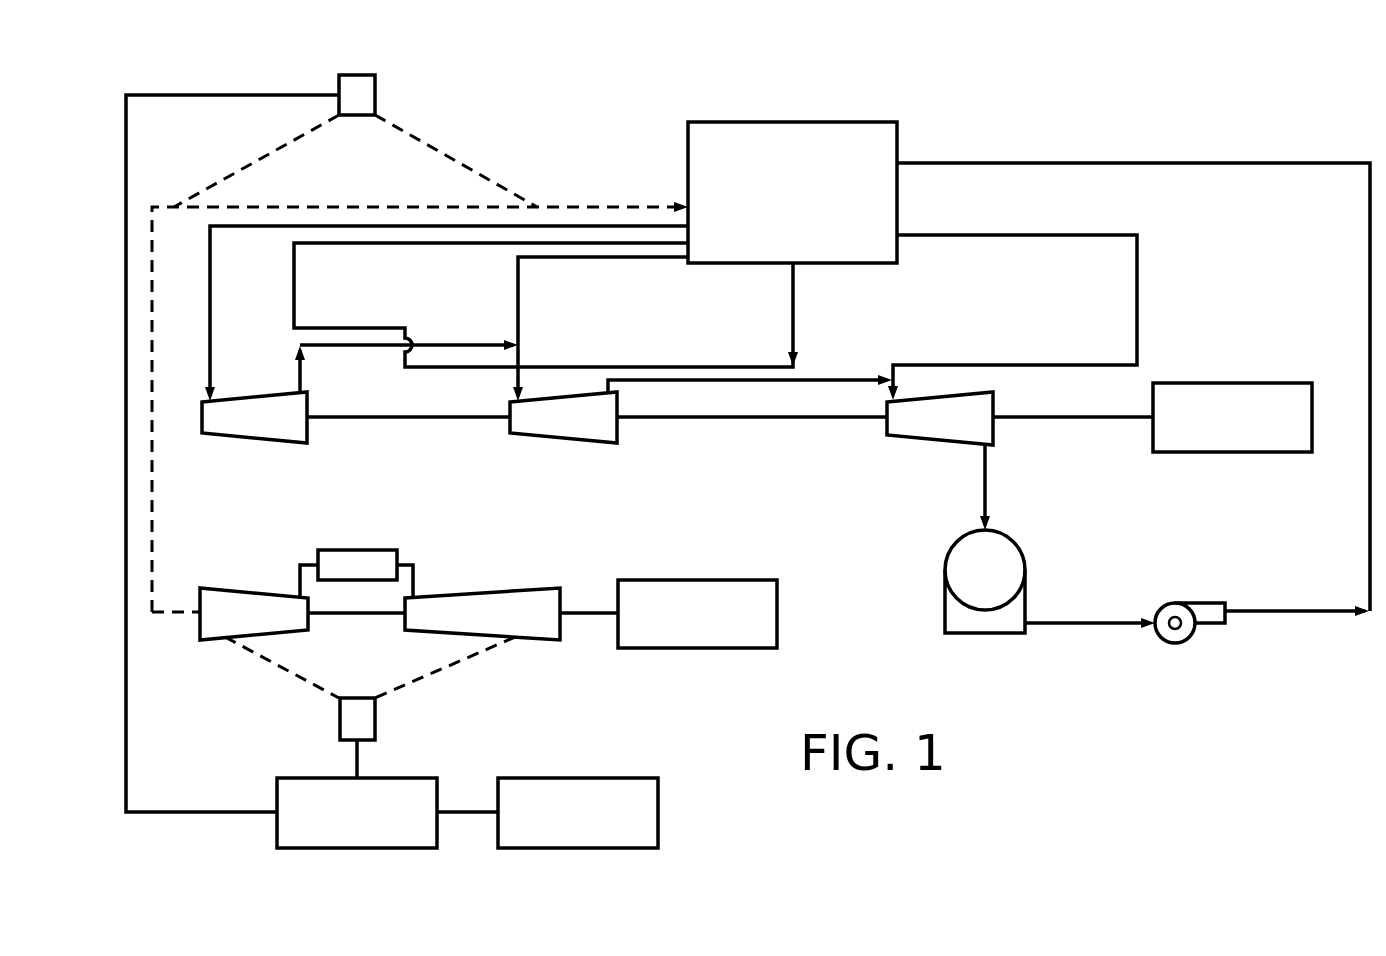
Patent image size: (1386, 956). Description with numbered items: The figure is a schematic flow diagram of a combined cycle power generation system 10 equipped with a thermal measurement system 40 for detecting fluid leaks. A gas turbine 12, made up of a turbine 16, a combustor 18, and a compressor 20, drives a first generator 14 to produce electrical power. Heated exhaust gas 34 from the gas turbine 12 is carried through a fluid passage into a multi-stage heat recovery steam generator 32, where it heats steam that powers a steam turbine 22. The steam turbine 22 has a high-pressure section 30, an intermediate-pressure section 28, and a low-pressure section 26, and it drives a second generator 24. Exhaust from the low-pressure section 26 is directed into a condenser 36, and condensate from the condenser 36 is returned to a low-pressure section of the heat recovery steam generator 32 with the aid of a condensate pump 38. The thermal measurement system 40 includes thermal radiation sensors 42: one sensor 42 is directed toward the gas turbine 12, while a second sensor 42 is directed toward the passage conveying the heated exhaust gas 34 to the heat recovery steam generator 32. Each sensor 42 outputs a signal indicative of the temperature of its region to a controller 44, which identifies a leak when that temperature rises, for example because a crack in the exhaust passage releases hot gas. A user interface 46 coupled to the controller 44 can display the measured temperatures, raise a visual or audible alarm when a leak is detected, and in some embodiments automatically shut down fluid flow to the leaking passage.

The combined cycle power generation system 10 is at (1188, 95).
The gas turbine 12 is at (310, 658).
The first generator 14 is at (697, 580).
The turbine 16 is at (258, 592).
The combustor 18 is at (357, 550).
The compressor 20 is at (486, 593).
The steam turbine 22 is at (644, 466).
The second generator 24 is at (1233, 383).
The low-pressure section 26 is at (940, 437).
The intermediate-pressure section 28 is at (566, 447).
The high-pressure section 30 is at (255, 440).
The heat recovery steam generator 32 is at (793, 122).
The heated exhaust gas 34 is at (155, 488).
The condenser 36 is at (945, 600).
The condensate pump 38 is at (1189, 640).
The thermal measurement system 40 is at (489, 724).
The thermal radiation sensor 42 is at (375, 93).
The controller 44 is at (300, 778).
The user interface 46 is at (582, 778).